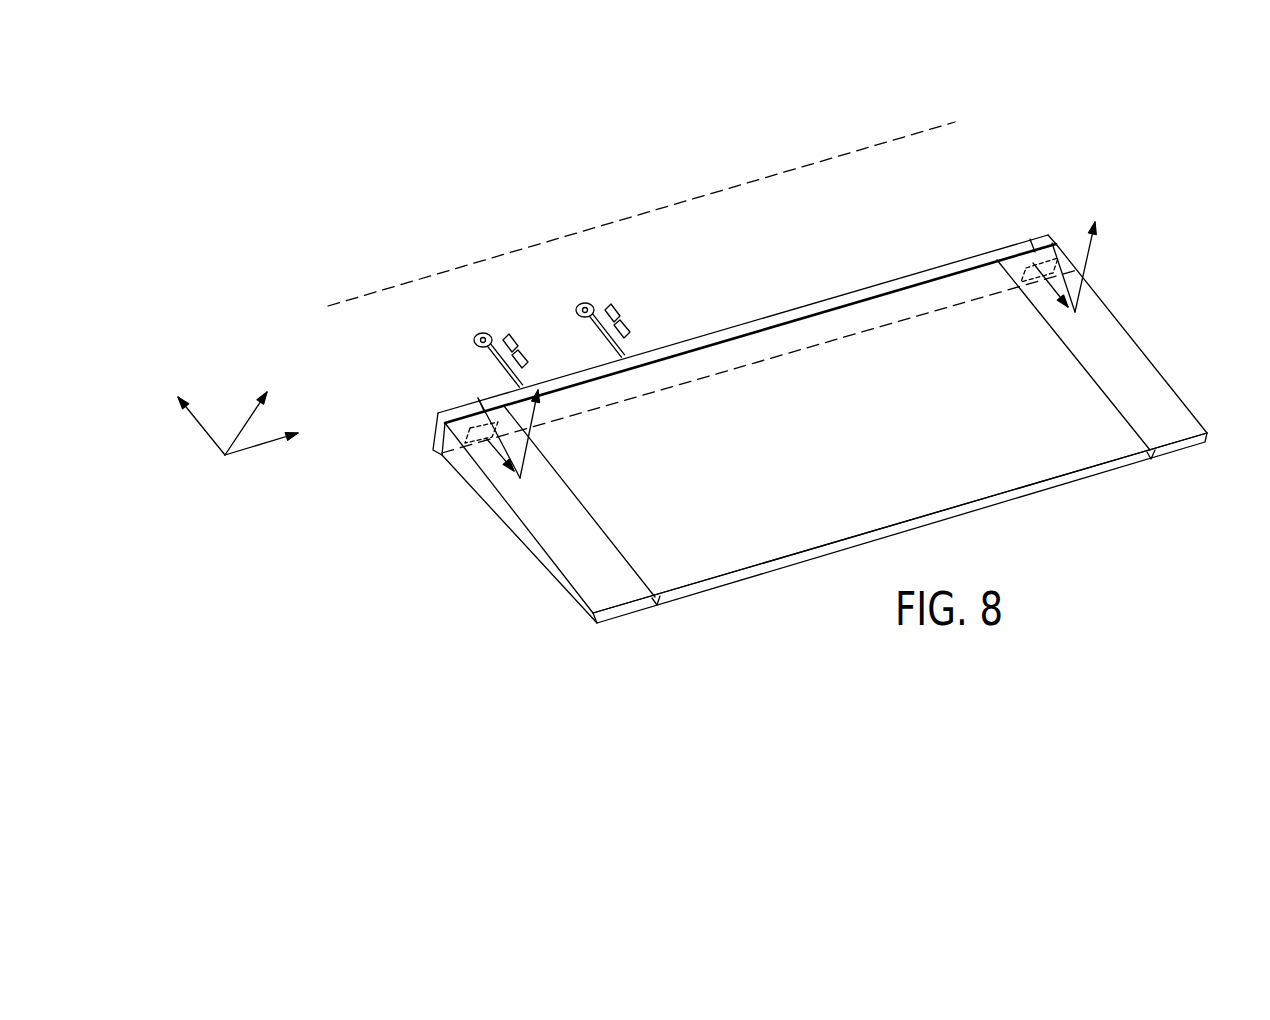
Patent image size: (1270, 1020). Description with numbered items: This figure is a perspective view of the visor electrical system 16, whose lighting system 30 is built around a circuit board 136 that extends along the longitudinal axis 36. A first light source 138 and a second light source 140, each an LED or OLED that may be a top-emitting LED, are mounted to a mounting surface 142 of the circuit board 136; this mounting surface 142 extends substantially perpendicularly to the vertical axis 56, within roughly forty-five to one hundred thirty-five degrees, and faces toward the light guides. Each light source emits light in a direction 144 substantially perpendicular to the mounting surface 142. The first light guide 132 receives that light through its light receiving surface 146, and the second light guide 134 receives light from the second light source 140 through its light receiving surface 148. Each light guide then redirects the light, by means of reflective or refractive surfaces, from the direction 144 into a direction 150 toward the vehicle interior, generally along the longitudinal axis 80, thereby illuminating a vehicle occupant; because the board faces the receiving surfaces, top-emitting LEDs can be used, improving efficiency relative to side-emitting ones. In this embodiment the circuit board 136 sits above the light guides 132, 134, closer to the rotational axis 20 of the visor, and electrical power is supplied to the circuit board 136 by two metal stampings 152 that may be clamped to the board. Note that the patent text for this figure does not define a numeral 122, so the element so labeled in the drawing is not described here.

The electrical system 16 is at (814, 417).
The rotational axis 20 is at (845, 155).
The lighting system 30 is at (397, 433).
The longitudinal axis 36 is at (257, 445).
The vertical axis 56 is at (203, 428).
The longitudinal axis 80 is at (242, 428).
The upper surface 122 is at (783, 522).
The first light guide 132 is at (612, 585).
The second light guide 134 is at (1165, 423).
The circuit board 136 is at (882, 282).
The first light source 138 is at (476, 396).
The second light source 140 is at (1027, 236).
The mounting surface 142 is at (660, 378).
The direction 144 is at (493, 455).
The light receiving surface 146 is at (437, 440).
The light receiving surface 148 is at (1060, 243).
The direction 150 is at (528, 432).
The metal stampings 152 is at (575, 338).